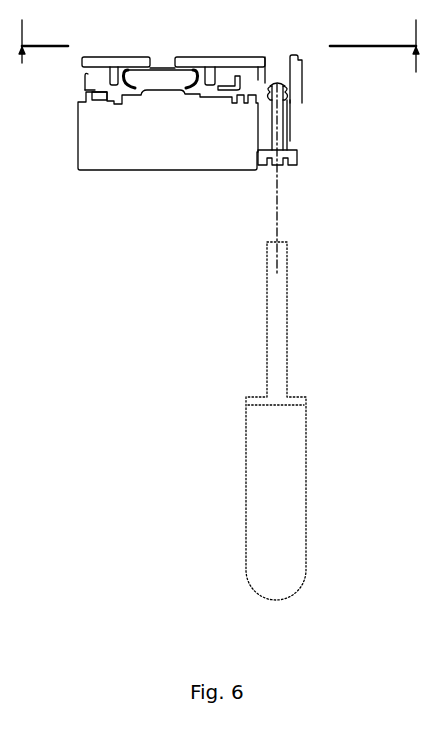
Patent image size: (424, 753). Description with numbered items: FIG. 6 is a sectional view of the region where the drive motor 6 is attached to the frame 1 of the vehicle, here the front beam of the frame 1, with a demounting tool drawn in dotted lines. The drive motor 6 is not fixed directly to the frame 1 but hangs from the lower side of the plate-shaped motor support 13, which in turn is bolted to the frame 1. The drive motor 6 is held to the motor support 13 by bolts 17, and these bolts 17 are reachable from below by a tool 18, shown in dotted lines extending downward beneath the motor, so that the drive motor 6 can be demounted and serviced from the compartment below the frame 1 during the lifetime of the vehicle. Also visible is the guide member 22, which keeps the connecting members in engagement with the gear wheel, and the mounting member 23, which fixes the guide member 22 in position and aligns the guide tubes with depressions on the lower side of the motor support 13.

The frame 1 is at (43, 52).
The drive motor 6 is at (152, 158).
The motor support 13 is at (302, 62).
The bolts 17 is at (290, 142).
The tool 18 is at (296, 470).
The guide member 22 is at (207, 83).
The mounting member 23 is at (84, 93).